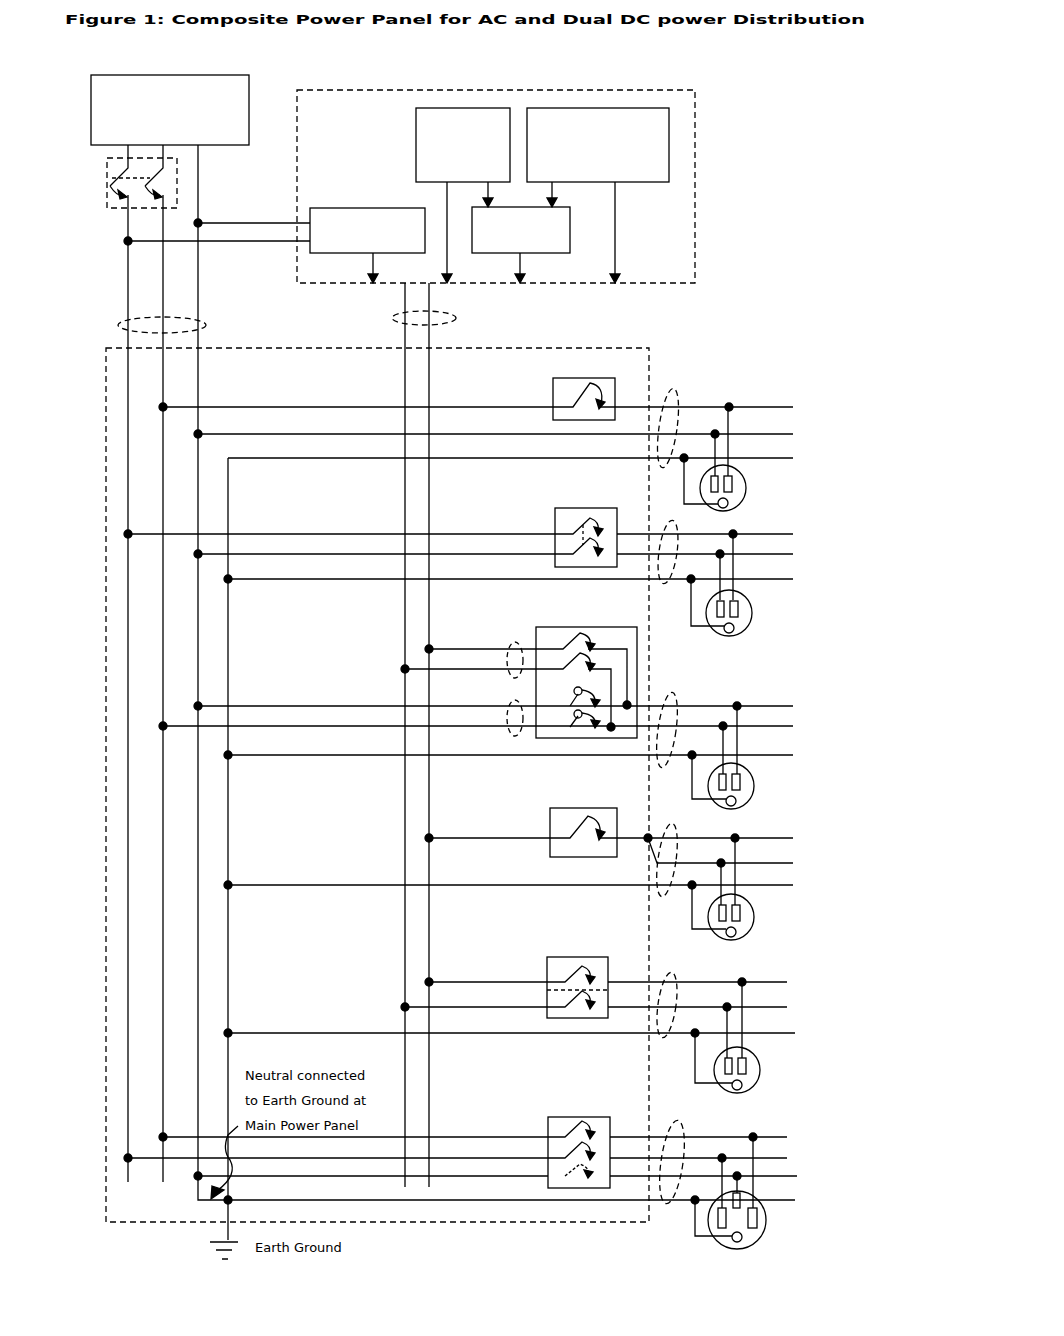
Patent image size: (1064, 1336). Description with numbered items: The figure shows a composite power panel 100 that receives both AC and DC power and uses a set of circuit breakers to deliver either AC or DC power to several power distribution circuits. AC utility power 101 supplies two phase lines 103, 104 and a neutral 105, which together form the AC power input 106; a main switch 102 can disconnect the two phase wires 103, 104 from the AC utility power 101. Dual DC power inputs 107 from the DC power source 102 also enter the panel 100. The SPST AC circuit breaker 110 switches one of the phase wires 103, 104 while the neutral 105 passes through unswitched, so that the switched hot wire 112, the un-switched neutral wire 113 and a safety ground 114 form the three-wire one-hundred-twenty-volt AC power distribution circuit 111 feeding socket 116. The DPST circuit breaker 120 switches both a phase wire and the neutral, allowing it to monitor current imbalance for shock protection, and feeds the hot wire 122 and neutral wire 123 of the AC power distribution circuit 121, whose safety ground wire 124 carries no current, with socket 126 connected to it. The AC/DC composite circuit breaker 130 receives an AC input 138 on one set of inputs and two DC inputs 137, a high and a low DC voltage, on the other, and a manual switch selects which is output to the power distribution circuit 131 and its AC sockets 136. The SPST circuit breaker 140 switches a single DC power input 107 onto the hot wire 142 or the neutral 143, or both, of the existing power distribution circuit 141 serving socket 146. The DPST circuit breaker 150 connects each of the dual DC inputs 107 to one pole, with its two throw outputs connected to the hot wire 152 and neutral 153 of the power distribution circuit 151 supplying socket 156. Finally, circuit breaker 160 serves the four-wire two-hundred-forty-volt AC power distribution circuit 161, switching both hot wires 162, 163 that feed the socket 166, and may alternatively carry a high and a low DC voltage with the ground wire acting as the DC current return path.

The composite power panel 100 is at (644, 343).
The AC utility power 101 is at (170, 110).
The main switch 102 is at (192, 180).
The phase line 103 is at (128, 259).
The phase line 104 is at (163, 291).
The neutral 105 is at (199, 279).
The AC power input 106 is at (208, 322).
The dual DC power inputs 107 is at (444, 312).
The SPST AC circuit breaker 110 is at (552, 395).
The 120V AC power distribution circuit 111 is at (660, 465).
The hot wire 112 is at (741, 412).
The neutral wire 113 is at (745, 438).
The safety ground 114 is at (744, 462).
The AC socket 116 is at (748, 481).
The DPST circuit breaker 120 is at (554, 520).
The AC power distribution circuit 121 is at (664, 581).
The hot wire 122 is at (752, 540).
The neutral wire 123 is at (752, 560).
The safety ground wire 124 is at (750, 585).
The AC socket 126 is at (756, 618).
The AC/DC composite circuit breaker 130 is at (536, 640).
The AC power distribution circuit 131 is at (675, 760).
The AC socket 136 is at (758, 775).
The DC inputs 137 is at (515, 681).
The AC input 138 is at (520, 733).
The SPST circuit breaker 140 is at (550, 829).
The power distribution circuit 141 is at (675, 895).
The hot wire 142 is at (750, 837).
The neutral 143 is at (754, 863).
The socket 146 is at (758, 908).
The DPST circuit breaker 150 is at (546, 970).
The AC power distribution circuit 151 is at (675, 1035).
The hot wire 152 is at (634, 1011).
The neutral 153 is at (634, 1025).
The AC socket 156 is at (762, 1068).
The circuit breaker 160 is at (522, 1138).
The 240V AC power distribution circuit 161 is at (678, 1210).
The hot wire 162 is at (473, 1162).
The hot wire 163 is at (455, 1174).
The 240V AC socket 166 is at (768, 1217).